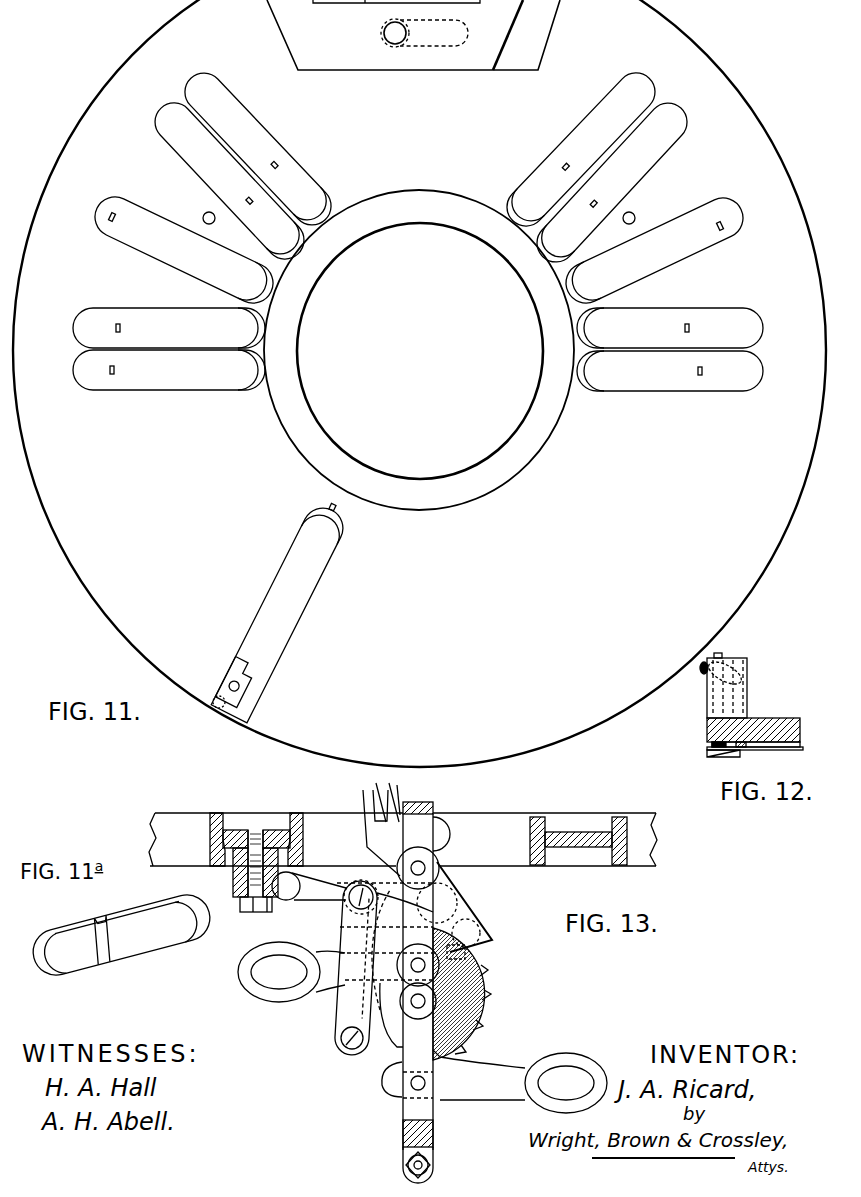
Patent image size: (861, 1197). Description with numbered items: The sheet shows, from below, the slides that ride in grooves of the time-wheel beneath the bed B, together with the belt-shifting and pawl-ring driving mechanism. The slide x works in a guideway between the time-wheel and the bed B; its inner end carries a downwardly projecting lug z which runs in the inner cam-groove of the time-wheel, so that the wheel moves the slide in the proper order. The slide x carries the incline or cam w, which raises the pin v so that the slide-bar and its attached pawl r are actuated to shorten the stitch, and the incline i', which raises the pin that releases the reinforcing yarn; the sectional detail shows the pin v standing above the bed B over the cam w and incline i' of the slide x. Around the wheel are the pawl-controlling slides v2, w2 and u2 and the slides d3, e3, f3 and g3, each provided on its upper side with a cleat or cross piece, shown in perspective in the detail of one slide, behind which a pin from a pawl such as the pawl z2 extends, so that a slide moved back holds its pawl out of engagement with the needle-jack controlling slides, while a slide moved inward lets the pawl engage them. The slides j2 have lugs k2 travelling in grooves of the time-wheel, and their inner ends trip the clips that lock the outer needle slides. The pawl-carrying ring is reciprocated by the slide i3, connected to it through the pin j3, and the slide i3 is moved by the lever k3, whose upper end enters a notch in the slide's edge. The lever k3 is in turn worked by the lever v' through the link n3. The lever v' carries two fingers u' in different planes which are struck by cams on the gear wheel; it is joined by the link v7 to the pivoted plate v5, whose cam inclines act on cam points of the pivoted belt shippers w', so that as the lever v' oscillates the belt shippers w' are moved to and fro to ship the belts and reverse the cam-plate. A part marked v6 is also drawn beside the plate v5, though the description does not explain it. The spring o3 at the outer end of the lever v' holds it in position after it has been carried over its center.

In FIG. 11, the bed B is at (419, 383).
In FIG. 12, the bed B is at (792, 718).
In FIG. 11, the slide i3 is at (413, 35).
In FIG. 11, the pin j3 is at (392, 42).
In FIG. 11, the slide v2 is at (258, 149).
In FIG. 11, the slide w2 is at (229, 181).
In FIG. 11, the slide j2 is at (418, 249).
In FIG. 11, the lug k2 is at (113, 213).
In FIG. 11A, the lug k2 is at (104, 956).
In FIG. 11, the slide f3 is at (169, 328).
In FIG. 11, the slide g3 is at (169, 370).
In FIG. 11, the pawl z2 is at (581, 149).
In FIG. 11, the slide u2 is at (612, 182).
In FIG. 11, the slide d3 is at (670, 328).
In FIG. 11, the slide e3 is at (670, 371).
In FIG. 11, the slide x is at (280, 612).
In FIG. 12, the slide x is at (760, 758).
In FIG. 11, the lug z is at (331, 511).
In FIG. 11, the incline i' is at (245, 688).
In FIG. 12, the incline i' is at (719, 763).
In FIG. 11, the pin v is at (210, 717).
In FIG. 12, the pin v is at (730, 678).
In FIG. 11, the pawl r is at (213, 700).
In FIG. 12, the cam w is at (756, 757).
In FIG. 13, the finger u' is at (374, 827).
In FIG. 13, the lever v' is at (414, 992).
In FIG. 13, the lever k3 is at (262, 903).
In FIG. 13, the link n3 is at (323, 900).
In FIG. 13, the link v7 is at (356, 968).
In FIG. 13, the belt shipper w' is at (422, 1027).
In FIG. 13, the plate v5 is at (425, 965).
In FIG. 13, the spring o3 is at (463, 985).
In FIG. 13, the pawl v6 is at (418, 1001).